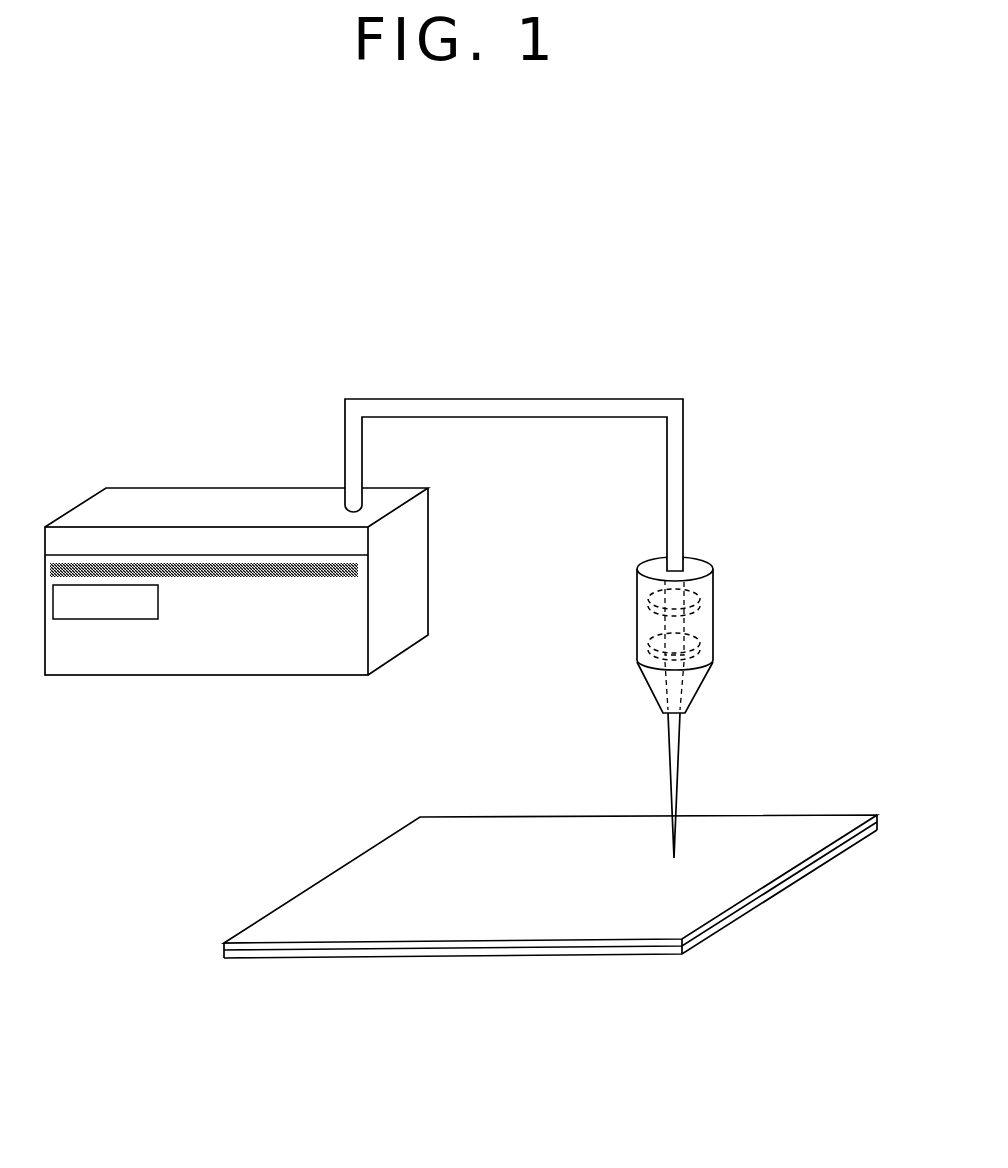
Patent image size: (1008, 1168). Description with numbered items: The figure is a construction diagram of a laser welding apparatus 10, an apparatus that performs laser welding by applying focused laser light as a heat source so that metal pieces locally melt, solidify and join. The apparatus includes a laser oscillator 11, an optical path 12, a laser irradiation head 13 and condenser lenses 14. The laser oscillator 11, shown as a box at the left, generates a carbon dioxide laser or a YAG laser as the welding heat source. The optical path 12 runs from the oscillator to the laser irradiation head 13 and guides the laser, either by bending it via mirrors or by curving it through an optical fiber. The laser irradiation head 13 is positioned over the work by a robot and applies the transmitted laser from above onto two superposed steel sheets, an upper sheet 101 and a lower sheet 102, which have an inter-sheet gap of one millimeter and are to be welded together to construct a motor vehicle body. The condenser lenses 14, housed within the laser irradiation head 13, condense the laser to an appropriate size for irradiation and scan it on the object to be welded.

The laser welding apparatus 10 is at (696, 232).
The laser oscillator 11 is at (143, 508).
The optical path 12 is at (672, 418).
The laser irradiation head 13 is at (713, 593).
The condenser lenses 14 is at (640, 603).
The upper sheet 101 is at (224, 947).
The lower sheet 102 is at (224, 955).